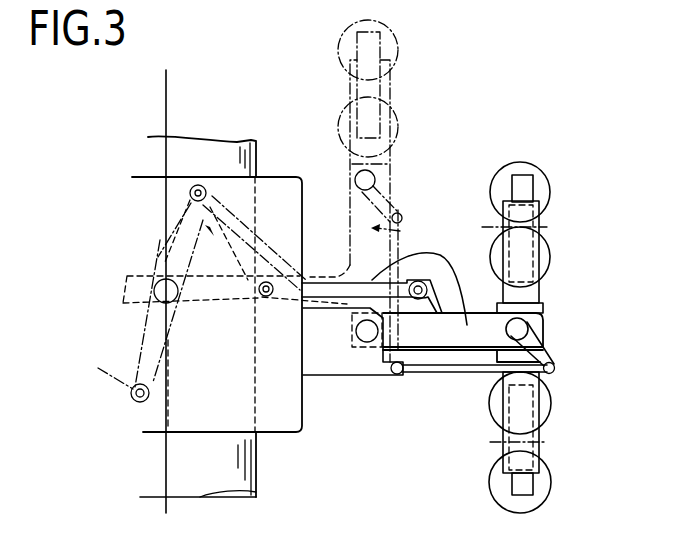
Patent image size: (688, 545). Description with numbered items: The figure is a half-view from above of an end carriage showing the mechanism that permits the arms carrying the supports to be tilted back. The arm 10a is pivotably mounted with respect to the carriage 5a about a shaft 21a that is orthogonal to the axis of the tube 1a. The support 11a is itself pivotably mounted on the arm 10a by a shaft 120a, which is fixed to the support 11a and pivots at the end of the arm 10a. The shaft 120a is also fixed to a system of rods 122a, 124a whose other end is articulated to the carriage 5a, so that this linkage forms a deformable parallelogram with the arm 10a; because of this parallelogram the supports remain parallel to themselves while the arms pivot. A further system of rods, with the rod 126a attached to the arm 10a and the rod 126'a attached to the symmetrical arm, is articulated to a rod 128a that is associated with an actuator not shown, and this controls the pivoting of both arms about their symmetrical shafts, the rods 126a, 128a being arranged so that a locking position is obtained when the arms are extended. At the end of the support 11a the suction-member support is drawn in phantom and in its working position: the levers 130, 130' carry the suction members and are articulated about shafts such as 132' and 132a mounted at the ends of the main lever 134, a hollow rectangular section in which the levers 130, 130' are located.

The tube 1a is at (238, 141).
The carriage 5a is at (318, 166).
The support 11a is at (426, 61).
The arm 10a is at (436, 338).
The shaft 21a is at (362, 332).
The shaft 120a is at (528, 327).
The rod 122a is at (547, 343).
The rod 124a is at (462, 373).
The rod 126a is at (433, 250).
The rod 126'a is at (203, 315).
The rod 128a is at (207, 277).
The first lever 130 is at (549, 482).
The first lever 130' is at (511, 173).
The shaft 132' is at (554, 236).
The roller 132a is at (547, 442).
The main lever 134 is at (539, 263).